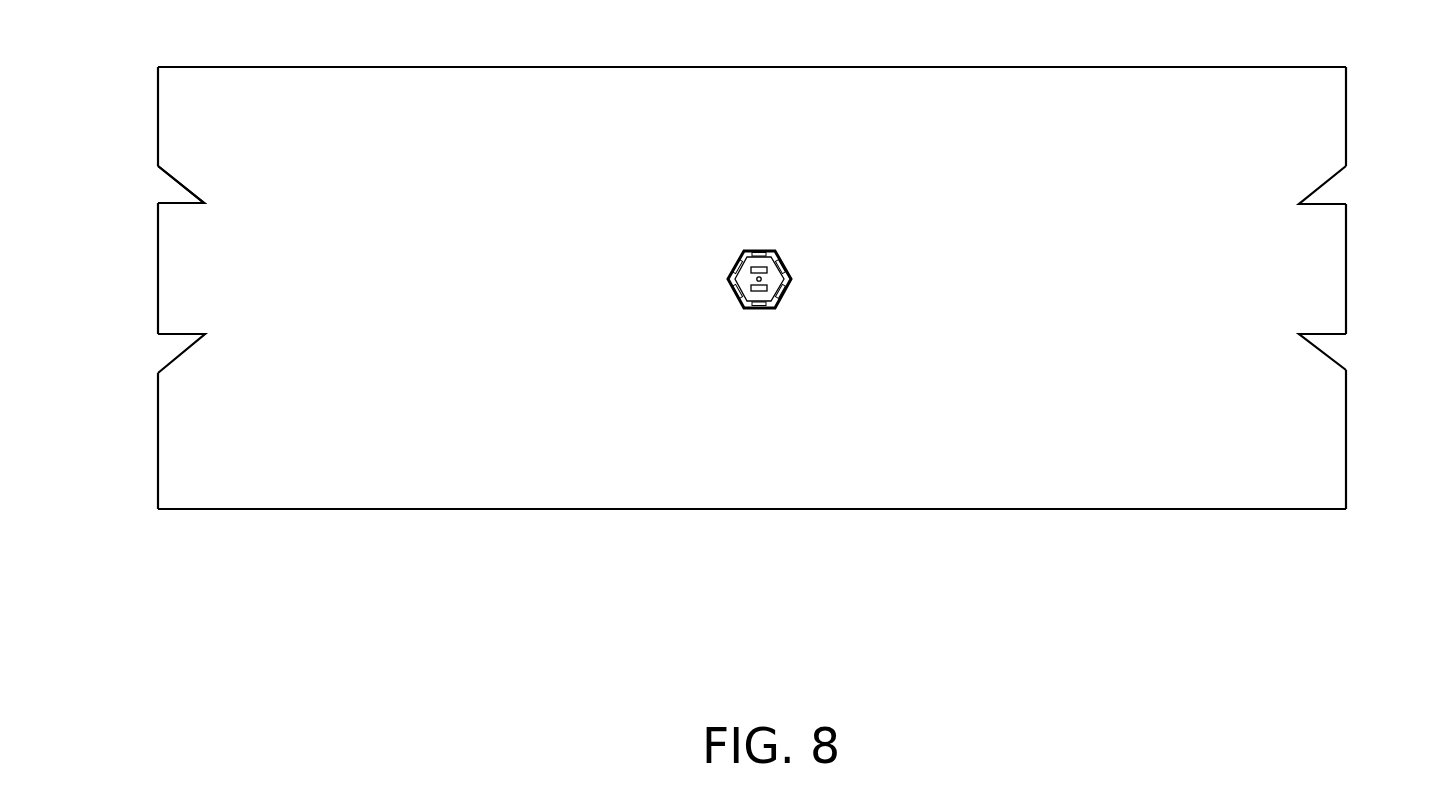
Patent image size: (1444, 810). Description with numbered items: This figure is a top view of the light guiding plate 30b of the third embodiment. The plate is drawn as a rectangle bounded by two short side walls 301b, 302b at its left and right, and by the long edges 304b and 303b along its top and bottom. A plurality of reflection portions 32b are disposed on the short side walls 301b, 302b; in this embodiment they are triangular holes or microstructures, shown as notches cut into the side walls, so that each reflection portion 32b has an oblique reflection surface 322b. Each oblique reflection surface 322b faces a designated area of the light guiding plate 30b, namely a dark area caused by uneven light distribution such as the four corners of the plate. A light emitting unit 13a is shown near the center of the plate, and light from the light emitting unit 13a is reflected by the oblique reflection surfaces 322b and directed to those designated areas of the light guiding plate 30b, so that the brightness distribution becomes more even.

The light guiding plate 30b is at (178, 107).
The top surface of second clamping block 304b is at (834, 67).
The bottom surface of second clamping block 303b is at (679, 509).
The short side wall 302b is at (1348, 118).
The short side wall 301b is at (158, 258).
The reflection portion 32b is at (165, 203).
The oblique reflection surface 322b is at (182, 183).
The light emitting unit 13a is at (790, 276).